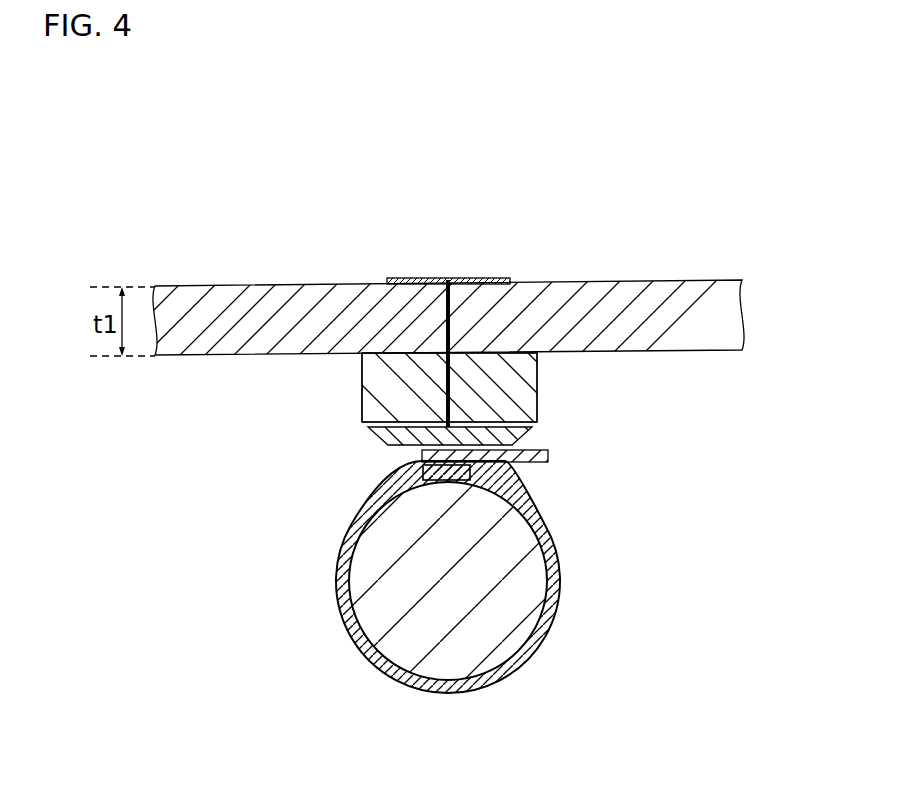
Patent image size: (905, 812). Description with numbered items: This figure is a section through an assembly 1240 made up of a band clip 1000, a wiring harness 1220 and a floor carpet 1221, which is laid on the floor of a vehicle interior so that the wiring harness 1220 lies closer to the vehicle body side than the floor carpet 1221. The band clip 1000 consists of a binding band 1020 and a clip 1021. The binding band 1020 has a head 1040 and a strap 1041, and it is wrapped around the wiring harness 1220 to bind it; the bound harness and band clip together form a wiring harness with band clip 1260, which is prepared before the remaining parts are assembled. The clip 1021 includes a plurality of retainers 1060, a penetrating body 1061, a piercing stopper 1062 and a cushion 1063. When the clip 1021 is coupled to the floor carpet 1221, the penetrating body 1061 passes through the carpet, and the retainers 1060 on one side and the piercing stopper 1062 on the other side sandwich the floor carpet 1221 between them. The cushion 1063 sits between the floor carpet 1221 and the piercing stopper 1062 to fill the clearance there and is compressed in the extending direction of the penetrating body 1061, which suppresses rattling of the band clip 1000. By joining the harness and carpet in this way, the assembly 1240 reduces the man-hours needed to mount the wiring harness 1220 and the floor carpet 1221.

The assembly 1240 is at (698, 132).
The floor carpet 1221 is at (732, 318).
The clip 1021 is at (524, 310).
The retainers 1060 is at (488, 282).
The penetrating body 1061 is at (450, 320).
The cushion 1063 is at (536, 384).
The piercing stopper 1062 is at (528, 430).
The wiring harness with band clip 1260 is at (372, 409).
The band clip 1000 is at (362, 395).
The wiring harness 1220 is at (398, 461).
The binding band 1020 is at (526, 577).
The head 1040 is at (447, 473).
The strap 1041 is at (560, 588).